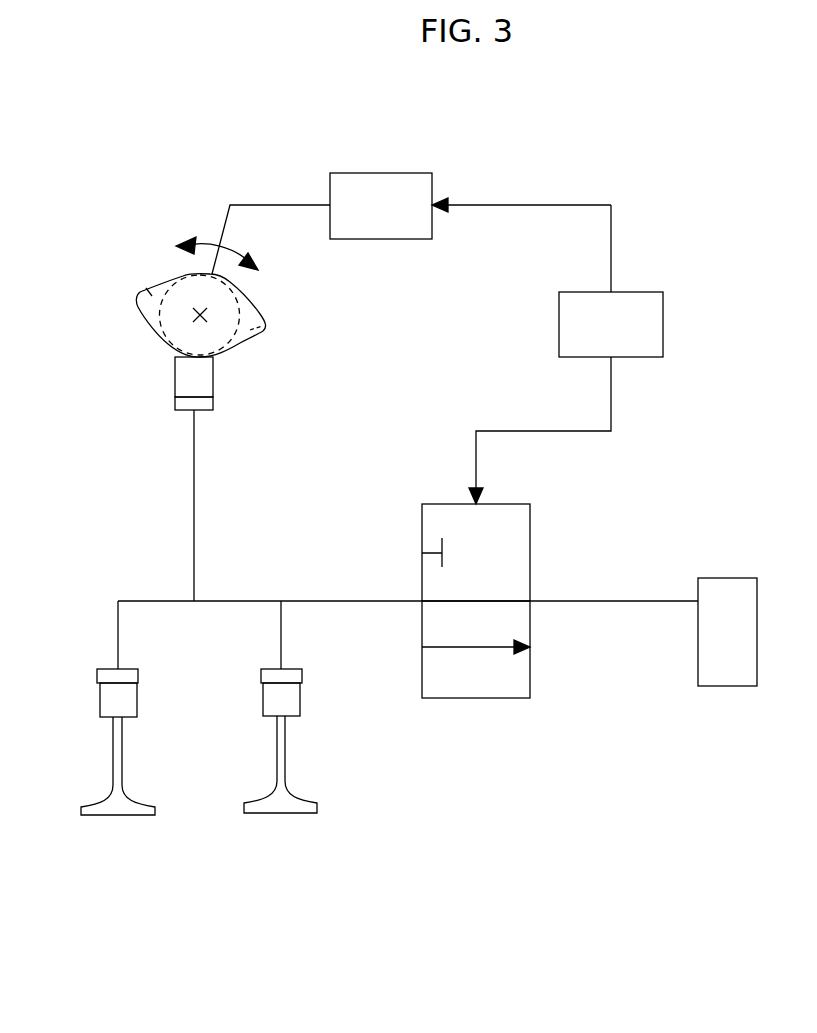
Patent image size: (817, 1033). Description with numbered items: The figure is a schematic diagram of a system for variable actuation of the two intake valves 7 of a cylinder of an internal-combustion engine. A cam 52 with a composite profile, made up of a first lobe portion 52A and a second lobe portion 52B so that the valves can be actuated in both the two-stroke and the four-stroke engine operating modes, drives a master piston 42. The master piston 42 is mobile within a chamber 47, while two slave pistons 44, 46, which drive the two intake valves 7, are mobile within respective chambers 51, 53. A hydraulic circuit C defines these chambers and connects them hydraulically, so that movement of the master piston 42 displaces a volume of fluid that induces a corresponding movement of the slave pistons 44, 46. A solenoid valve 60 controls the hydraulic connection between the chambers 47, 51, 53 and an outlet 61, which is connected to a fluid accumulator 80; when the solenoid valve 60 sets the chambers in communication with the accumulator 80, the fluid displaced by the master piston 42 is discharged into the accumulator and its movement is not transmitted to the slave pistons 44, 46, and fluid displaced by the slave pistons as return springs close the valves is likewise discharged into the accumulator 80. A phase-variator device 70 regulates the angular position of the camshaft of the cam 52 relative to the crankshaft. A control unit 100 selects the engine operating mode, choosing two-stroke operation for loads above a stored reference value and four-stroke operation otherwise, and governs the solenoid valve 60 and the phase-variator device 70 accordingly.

The intake valves 7 is at (110, 788).
The master piston 42 is at (177, 367).
The slave piston 44 is at (102, 716).
The slave piston 46 is at (287, 703).
The chamber 47 is at (177, 400).
The chamber 51 is at (100, 675).
The cam 52 is at (172, 283).
The lobe portion 52A is at (262, 330).
The lobe portion 52B is at (140, 292).
The chamber 53 is at (293, 675).
The solenoid valve 60 is at (538, 562).
The outlet 61 is at (537, 602).
The phase-variator device 70 is at (438, 228).
The fluid accumulator 80 is at (764, 619).
The control unit 100 is at (663, 327).
The hydraulic circuit C is at (166, 586).